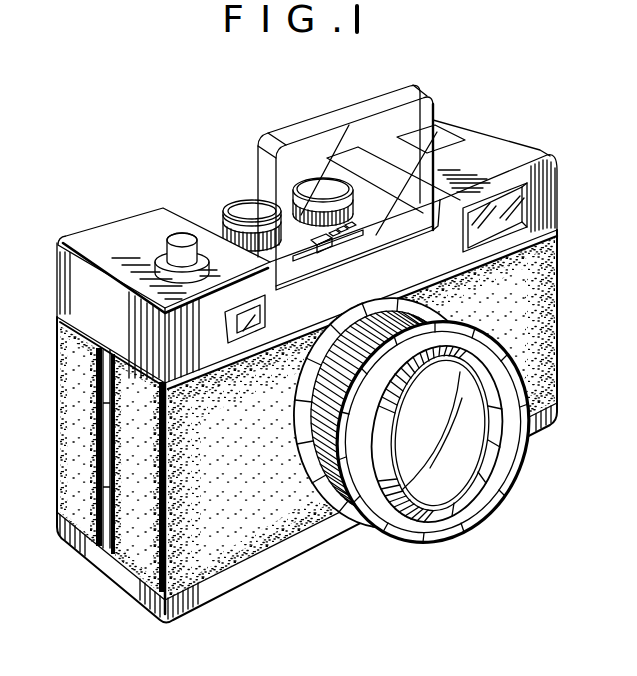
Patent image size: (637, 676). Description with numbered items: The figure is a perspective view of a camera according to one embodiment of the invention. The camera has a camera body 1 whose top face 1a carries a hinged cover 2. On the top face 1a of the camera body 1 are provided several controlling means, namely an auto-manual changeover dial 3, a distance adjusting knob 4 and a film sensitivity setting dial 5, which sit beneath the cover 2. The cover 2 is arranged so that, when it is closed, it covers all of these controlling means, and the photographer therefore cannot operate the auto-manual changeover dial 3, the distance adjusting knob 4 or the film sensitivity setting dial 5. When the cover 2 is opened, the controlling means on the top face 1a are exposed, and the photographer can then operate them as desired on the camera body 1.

The camera body 1 is at (564, 298).
The top face 1a is at (212, 227).
The hinged cover 2 is at (326, 118).
The auto-manual changeover dial 3 is at (242, 203).
The distance adjusting knob 4 is at (345, 289).
The film sensitivity setting dial 5 is at (302, 178).